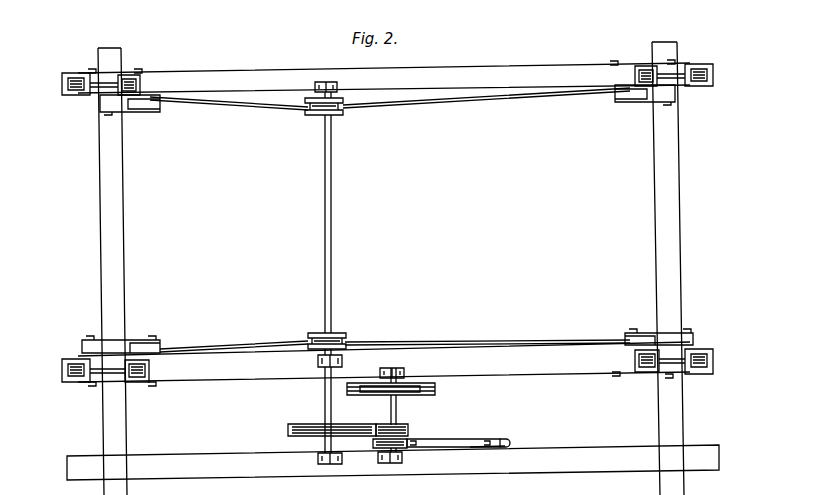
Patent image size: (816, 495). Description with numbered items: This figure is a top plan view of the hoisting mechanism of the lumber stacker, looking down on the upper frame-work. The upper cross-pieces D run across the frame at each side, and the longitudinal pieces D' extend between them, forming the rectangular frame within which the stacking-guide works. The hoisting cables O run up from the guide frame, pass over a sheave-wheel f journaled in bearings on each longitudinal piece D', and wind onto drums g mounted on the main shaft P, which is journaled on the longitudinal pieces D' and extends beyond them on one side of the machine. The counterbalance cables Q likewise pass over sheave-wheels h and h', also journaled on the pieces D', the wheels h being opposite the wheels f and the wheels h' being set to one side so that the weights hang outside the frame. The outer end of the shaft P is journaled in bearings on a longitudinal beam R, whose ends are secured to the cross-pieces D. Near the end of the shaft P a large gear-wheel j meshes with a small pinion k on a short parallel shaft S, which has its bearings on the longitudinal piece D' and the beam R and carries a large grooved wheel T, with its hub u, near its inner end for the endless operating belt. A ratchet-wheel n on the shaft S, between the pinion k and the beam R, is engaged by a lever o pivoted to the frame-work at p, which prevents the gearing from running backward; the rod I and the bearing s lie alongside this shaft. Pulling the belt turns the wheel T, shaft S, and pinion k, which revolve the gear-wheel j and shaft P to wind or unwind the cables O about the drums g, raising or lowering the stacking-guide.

The upper cross-pieces D is at (388, 268).
The longitudinal pieces D' is at (384, 212).
The longitudinal beam R is at (366, 473).
The lever pivot p is at (486, 452).
The sheave-wheels h' is at (372, 220).
The sheave-wheels h is at (381, 222).
The cables Q is at (95, 90).
The sheave-wheel f is at (136, 112).
The cables O is at (234, 104).
The lever o is at (440, 108).
The drums g is at (336, 114).
The main shaft P is at (333, 232).
The grooved wheel T is at (428, 394).
The gear hub u is at (426, 388).
The short parallel shaft S is at (389, 408).
The large gear-wheel j is at (290, 423).
The small pinion k is at (408, 428).
The ratchet-wheel n is at (408, 444).
The rod I is at (453, 434).
The shaft bearing bracket s is at (402, 456).